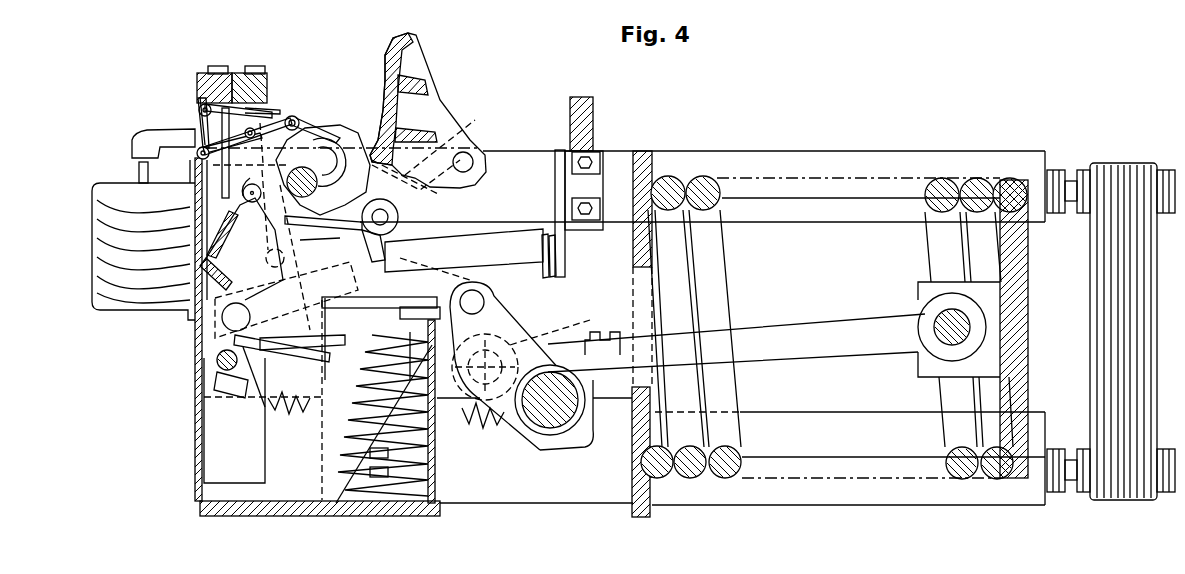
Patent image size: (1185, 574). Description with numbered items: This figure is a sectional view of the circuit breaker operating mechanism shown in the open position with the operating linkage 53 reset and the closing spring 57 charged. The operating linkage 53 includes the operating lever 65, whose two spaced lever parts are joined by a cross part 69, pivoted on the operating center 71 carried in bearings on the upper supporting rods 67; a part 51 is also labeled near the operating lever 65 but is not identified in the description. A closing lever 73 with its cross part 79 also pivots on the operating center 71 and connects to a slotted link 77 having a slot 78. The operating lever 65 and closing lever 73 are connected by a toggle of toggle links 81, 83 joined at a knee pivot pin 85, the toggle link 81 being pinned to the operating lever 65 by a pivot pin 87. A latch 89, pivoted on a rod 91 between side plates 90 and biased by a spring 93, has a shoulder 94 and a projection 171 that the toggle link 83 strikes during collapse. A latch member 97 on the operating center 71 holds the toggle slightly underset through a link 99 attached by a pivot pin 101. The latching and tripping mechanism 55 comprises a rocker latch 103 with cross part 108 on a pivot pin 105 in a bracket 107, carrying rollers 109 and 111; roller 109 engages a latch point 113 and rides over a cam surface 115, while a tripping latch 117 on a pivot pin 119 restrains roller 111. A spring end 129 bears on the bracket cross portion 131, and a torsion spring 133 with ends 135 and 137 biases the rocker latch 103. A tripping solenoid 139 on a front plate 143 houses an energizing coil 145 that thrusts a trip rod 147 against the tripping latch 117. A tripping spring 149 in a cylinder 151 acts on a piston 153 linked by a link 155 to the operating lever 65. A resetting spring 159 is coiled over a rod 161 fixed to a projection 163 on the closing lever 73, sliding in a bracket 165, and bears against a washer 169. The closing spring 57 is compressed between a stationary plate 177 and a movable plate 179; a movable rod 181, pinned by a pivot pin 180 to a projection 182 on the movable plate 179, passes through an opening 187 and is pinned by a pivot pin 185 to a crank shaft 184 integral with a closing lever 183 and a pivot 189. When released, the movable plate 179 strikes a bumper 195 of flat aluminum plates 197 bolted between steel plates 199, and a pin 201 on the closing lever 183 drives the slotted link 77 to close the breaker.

The pivot hole 51 is at (470, 156).
The operating linkage 53 is at (335, 147).
The latching and tripping mechanism 55 is at (174, 171).
The closing spring 57 is at (928, 255).
The operating lever 65 is at (435, 96).
The supporting rods 67 is at (823, 215).
The cross part 69 is at (388, 80).
The operating center 71 is at (316, 195).
The closing lever 73 is at (207, 240).
The slotted link 77 is at (490, 283).
The slot 78 is at (437, 297).
The cross part 79 is at (206, 262).
The toggle link 81 is at (392, 230).
The toggle link 83 is at (386, 255).
The knee pivot pin 85 is at (330, 290).
The pivot pin 87 is at (438, 188).
The latch 89 is at (296, 360).
The side plates 90 is at (207, 460).
The rod 91 is at (216, 362).
The spring 93 is at (299, 416).
The shoulder 94 is at (330, 342).
The latch member 97 is at (352, 150).
The link 99 is at (258, 250).
The pivot pin 101 is at (252, 205).
The rocker latch 103 is at (237, 73).
The pivot pin 105 is at (229, 145).
The bracket 107 is at (266, 100).
The cross part 108 is at (270, 112).
The roller 109 is at (296, 117).
The roller 111 is at (199, 109).
The latch point 113 is at (298, 123).
The cam surface 115 is at (336, 140).
The tripping latch 117 is at (152, 135).
The pivot pin 119 is at (197, 154).
The end 129 is at (199, 99).
The cross portion 131 is at (198, 98).
The torsion spring 133 is at (250, 128).
The end 135 is at (199, 132).
The end 137 is at (275, 115).
The tripping solenoid 139 is at (143, 251).
The front plate 143 is at (195, 447).
The energizing coil 145 is at (148, 298).
The trip rod 147 is at (139, 171).
The tripping spring 149 is at (413, 462).
The cylinder 151 is at (437, 492).
The piston 153 is at (435, 478).
The link 155 is at (370, 436).
The resetting spring 159 is at (543, 240).
The rod 161 is at (463, 246).
The projection 163 is at (300, 258).
The bracket 165 is at (562, 278).
The washer 169 is at (310, 243).
The projection 171 is at (420, 304).
The stationary plate 177 is at (640, 152).
The movable plate 179 is at (1028, 280).
The pivot pin 180 is at (934, 330).
The movable rod 181 is at (768, 328).
The projection 182 is at (918, 370).
The closing lever 183 is at (510, 323).
The crank shaft 184 is at (534, 423).
The pivot pin 185 is at (535, 345).
The opening 187 is at (632, 278).
The pivot 189 is at (582, 390).
The bumper 195 is at (1123, 318).
The flat aluminum plates 197 is at (1115, 497).
The steel plates 199 is at (1092, 495).
The pin 201 is at (485, 300).